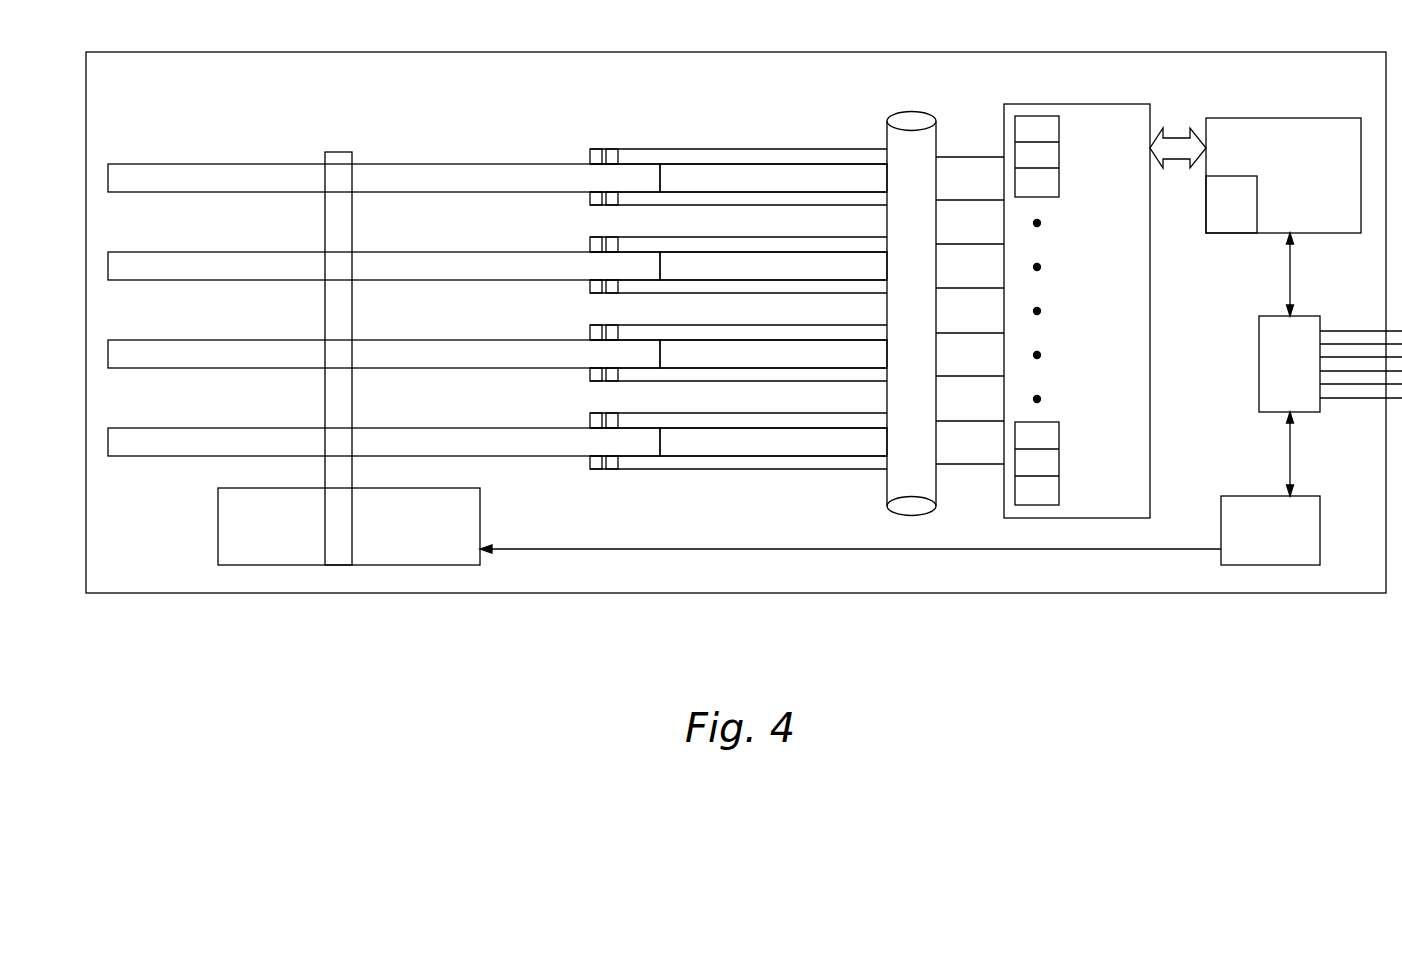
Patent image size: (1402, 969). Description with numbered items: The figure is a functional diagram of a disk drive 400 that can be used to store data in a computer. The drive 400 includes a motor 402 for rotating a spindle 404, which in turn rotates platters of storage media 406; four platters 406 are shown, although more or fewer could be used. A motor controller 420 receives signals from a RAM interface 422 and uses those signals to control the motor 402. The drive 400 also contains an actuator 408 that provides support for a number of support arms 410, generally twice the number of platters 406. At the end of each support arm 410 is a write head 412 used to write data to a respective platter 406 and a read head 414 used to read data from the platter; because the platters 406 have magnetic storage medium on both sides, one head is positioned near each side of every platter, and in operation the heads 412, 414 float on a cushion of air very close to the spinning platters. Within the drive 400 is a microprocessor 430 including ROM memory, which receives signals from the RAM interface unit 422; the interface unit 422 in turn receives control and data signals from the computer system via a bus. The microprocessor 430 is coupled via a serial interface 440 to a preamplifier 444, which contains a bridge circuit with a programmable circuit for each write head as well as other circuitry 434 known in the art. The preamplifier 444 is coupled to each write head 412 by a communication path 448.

The drive 400 is at (188, 676).
The motor 402 is at (227, 520).
The spindle 404 is at (344, 150).
The platters of storage media 406 is at (138, 172).
The actuator 408 is at (902, 118).
The support arms 410 is at (719, 153).
The write head 412 is at (596, 154).
The read head 414 is at (610, 154).
The motor controller 420 is at (1240, 505).
The RAM interface 422 is at (1265, 343).
The microprocessor 430 is at (1321, 120).
The other circuitry 434 is at (1043, 181).
The serial interface 440 is at (1178, 142).
The preamplifier 444 is at (1110, 125).
The communication path 448 is at (940, 156).